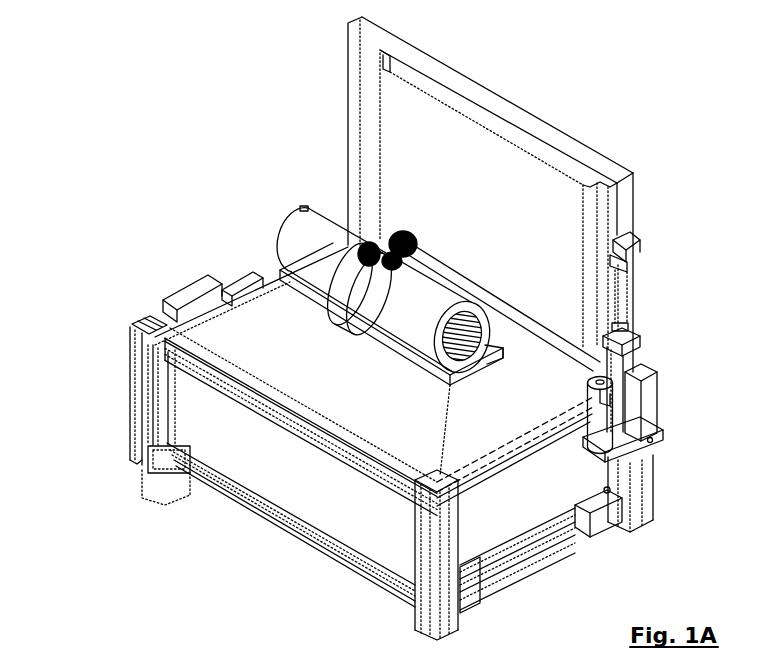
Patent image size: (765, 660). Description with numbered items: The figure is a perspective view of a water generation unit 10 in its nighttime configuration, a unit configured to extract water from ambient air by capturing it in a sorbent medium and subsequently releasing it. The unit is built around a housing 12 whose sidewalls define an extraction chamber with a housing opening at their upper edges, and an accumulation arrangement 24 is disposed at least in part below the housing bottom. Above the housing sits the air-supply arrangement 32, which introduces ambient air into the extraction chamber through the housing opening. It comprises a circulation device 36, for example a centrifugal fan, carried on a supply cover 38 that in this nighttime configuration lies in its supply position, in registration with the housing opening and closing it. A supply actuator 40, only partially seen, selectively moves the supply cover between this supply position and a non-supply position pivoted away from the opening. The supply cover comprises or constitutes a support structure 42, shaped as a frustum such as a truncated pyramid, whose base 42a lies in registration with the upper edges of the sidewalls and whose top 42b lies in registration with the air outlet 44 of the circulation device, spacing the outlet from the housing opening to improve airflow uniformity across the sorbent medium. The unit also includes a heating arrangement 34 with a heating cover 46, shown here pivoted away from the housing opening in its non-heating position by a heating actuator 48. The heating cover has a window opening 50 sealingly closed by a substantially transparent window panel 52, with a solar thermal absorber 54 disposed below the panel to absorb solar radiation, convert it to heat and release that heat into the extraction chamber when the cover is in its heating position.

The water generation unit 10 is at (390, 328).
The housing 12 is at (297, 467).
The accumulation arrangement 24 is at (297, 561).
The air-supply arrangement 32 is at (545, 470).
The heating arrangement 34 is at (668, 277).
The circulation device 36 is at (307, 248).
The supply cover 38 is at (230, 380).
The supply actuator 40 is at (198, 287).
The support structure 42 is at (242, 333).
The base 42a is at (400, 363).
The top 42b is at (383, 440).
The air outlet 44 is at (370, 330).
The heating cover 46 is at (347, 86).
The heating actuator 48 is at (647, 400).
The window opening 50 is at (362, 75).
The window panel 52 is at (413, 75).
The solar thermal absorber 54 is at (392, 128).